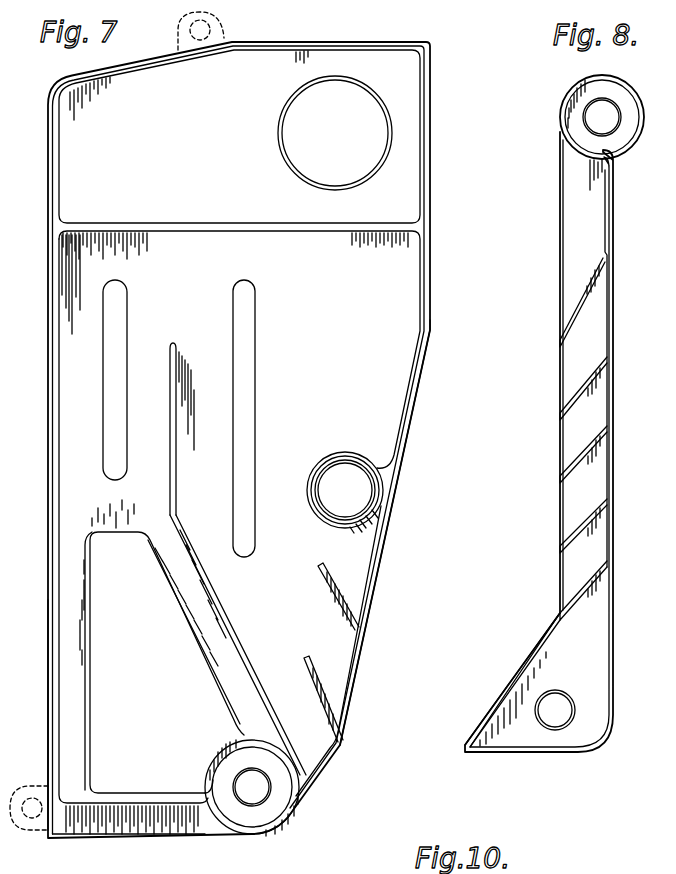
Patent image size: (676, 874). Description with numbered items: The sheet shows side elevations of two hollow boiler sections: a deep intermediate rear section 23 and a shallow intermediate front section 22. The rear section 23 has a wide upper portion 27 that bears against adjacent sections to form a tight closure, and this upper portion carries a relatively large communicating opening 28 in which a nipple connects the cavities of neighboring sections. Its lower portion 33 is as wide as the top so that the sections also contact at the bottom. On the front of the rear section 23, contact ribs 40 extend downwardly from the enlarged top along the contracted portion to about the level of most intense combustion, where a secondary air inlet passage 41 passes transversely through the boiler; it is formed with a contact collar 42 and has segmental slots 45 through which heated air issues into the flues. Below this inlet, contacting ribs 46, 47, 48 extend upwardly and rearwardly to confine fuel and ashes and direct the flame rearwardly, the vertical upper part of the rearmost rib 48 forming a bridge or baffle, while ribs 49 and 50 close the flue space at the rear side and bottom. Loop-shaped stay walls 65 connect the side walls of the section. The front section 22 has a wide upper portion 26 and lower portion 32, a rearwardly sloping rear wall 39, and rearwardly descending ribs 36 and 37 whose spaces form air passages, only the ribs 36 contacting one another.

In FIG. 8, the intermediate front section 22 is at (558, 205).
In FIG. 7, the intermediate rear section 23 is at (52, 262).
In FIG. 8, the upper portion of front section 26 is at (628, 95).
In FIG. 7, the upper portion of rear section 27 is at (239, 136).
In FIG. 7, the communicating opening 28 is at (292, 163).
In FIG. 8, the lower portion of front section 32 is at (563, 685).
In FIG. 7, the lower portion of rear section 33 is at (300, 780).
In FIG. 8, the rearwardly sloping rib 36 is at (578, 305).
In FIG. 8, the rearwardly sloping rib 37 is at (580, 390).
In FIG. 8, the rear wall of lower portion of front section 39 is at (510, 693).
In FIG. 7, the contact rib 40 is at (422, 370).
In FIG. 7, the secondary air inlet passage 41 is at (345, 490).
In FIG. 7, the contact collar 42 is at (345, 453).
In FIG. 7, the segmental slot 45 is at (318, 515).
In FIG. 7, the contacting fin or rib 46 is at (335, 580).
In FIG. 7, the contacting fin or rib 47 is at (306, 657).
In FIG. 7, the rearmost rib 48 is at (177, 412).
In FIG. 7, the rib 49 is at (48, 634).
In FIG. 7, the rib 50 is at (143, 792).
In FIG. 7, the stay wall 65 is at (232, 301).